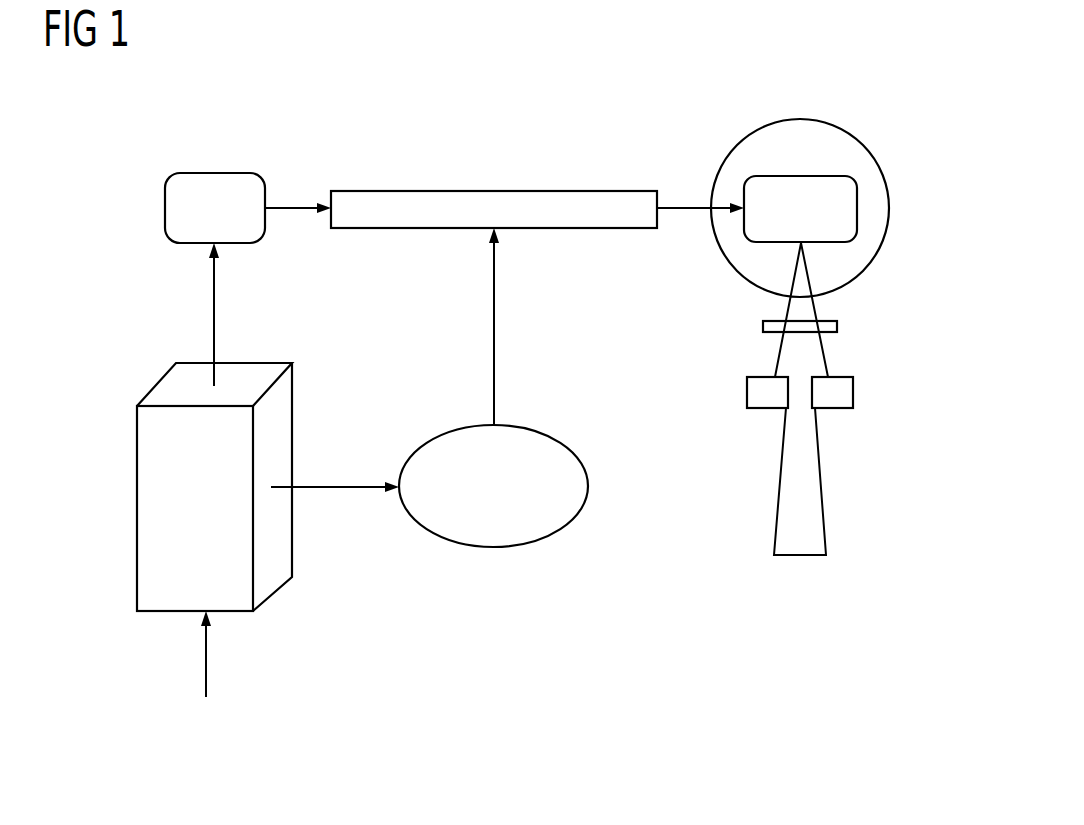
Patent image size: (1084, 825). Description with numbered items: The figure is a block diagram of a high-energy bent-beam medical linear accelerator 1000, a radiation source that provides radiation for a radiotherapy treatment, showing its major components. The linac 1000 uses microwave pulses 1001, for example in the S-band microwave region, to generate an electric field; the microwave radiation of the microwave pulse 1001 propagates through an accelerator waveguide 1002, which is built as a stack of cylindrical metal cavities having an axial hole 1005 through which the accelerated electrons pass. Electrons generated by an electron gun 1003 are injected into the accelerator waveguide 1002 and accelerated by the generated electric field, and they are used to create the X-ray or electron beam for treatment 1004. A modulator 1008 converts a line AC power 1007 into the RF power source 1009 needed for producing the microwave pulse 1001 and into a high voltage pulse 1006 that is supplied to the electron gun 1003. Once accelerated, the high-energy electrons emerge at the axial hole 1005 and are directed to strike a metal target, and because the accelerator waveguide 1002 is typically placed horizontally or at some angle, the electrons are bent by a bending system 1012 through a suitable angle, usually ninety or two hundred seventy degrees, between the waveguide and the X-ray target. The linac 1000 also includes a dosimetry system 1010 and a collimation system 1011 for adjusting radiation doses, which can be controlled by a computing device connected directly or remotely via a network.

The high-energy bent-beam medical linear accelerator 1000 is at (878, 84).
The microwave pulse 1001 is at (492, 327).
The accelerator waveguide 1002 is at (492, 190).
The electron gun 1003 is at (165, 211).
The beam for treatment 1004 is at (826, 517).
The axial hole 1005 is at (679, 206).
The high voltage pulse 1006 is at (212, 313).
The line AC power 1007 is at (203, 668).
The modulator 1008 is at (136, 514).
The RF power source 1009 is at (492, 548).
The dosimetry system 1010 is at (838, 325).
The collimation system 1011 is at (853, 388).
The bending system 1012 is at (857, 210).